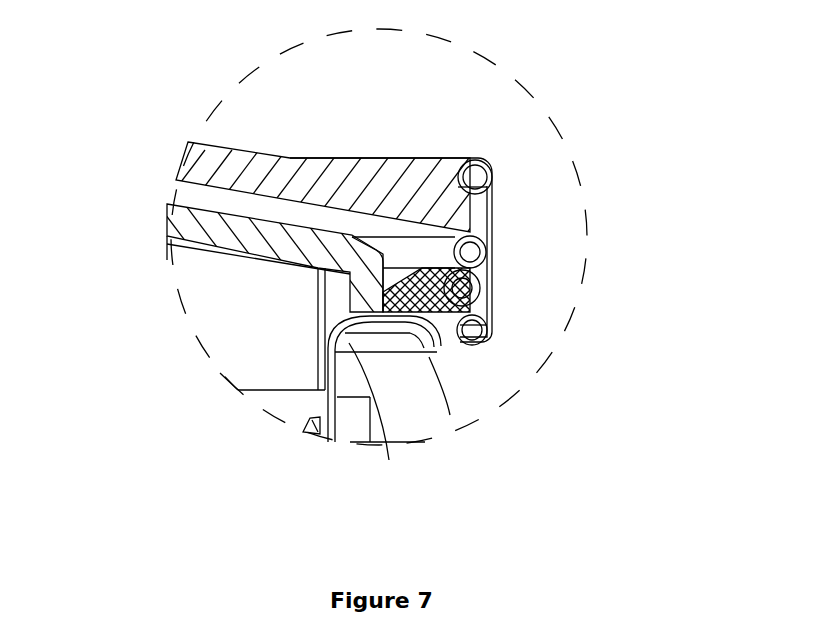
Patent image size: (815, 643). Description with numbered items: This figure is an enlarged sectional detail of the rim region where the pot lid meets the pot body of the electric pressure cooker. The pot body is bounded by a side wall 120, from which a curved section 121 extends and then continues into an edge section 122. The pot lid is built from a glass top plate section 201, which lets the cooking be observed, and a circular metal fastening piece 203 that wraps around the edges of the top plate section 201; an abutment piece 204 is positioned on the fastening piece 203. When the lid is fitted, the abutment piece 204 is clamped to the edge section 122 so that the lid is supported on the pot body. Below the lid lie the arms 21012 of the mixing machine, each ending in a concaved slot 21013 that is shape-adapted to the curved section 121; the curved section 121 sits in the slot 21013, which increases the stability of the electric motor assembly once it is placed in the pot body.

The top plate section 201 is at (210, 153).
The fastening piece 203 is at (450, 167).
The abutment piece 204 is at (432, 275).
The arms 21012 is at (207, 238).
The concaved slot 21013 is at (316, 387).
The side wall 120 is at (328, 440).
The curved section 121 is at (389, 460).
The edge section 122 is at (450, 415).